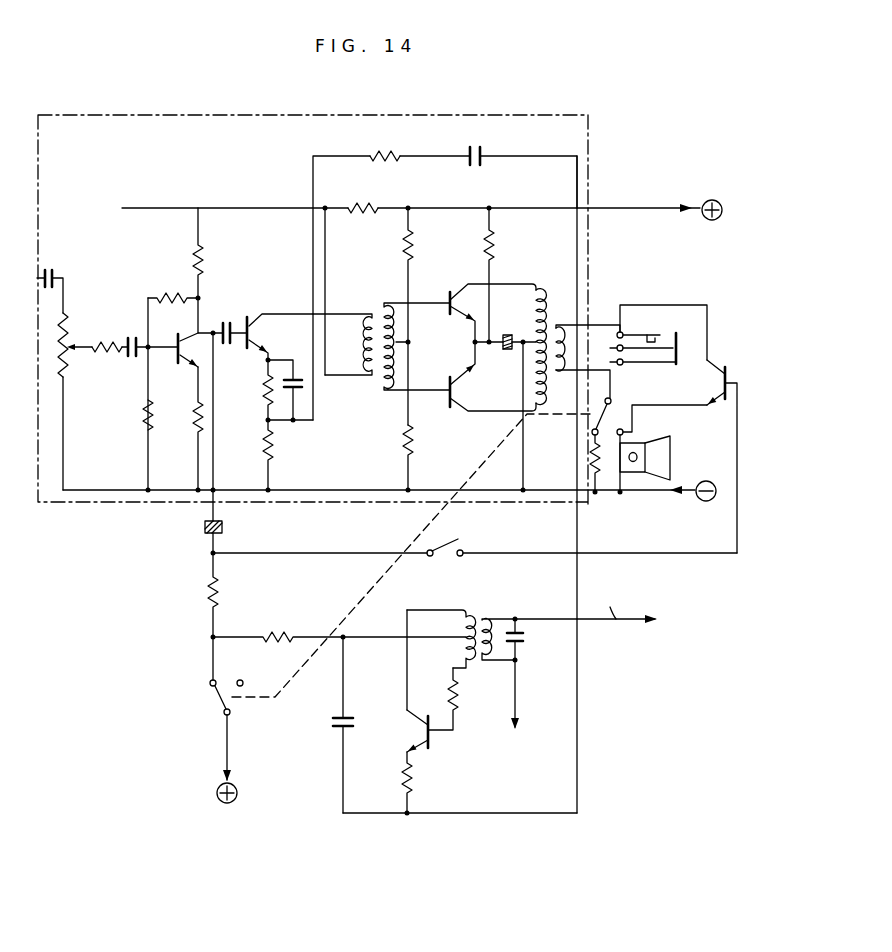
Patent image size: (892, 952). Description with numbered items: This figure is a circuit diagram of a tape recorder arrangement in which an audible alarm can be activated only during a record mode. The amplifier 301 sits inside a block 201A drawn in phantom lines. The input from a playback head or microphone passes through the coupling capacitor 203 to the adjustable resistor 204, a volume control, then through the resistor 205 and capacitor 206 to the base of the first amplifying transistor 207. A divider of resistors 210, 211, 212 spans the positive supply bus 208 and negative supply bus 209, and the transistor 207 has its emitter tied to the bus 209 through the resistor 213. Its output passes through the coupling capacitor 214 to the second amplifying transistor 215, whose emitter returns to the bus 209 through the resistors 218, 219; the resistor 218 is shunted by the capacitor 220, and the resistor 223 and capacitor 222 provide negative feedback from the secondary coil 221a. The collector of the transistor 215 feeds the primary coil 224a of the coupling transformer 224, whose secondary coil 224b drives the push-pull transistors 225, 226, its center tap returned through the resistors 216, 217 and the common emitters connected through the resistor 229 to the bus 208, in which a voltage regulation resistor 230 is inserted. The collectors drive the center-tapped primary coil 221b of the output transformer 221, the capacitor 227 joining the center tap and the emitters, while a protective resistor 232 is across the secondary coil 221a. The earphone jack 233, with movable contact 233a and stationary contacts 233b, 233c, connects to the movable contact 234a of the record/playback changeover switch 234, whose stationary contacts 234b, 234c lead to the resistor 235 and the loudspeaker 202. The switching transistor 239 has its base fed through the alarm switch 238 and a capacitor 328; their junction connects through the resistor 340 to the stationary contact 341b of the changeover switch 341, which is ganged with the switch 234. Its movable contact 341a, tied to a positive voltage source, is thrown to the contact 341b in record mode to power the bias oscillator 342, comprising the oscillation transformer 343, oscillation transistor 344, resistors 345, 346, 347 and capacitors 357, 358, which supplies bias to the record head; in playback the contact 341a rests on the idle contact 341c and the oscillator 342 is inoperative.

The amplifier 301 is at (264, 126).
The block 201A is at (592, 162).
The loudspeaker 202 is at (672, 458).
The coupling capacitor 203 is at (53, 272).
The adjustable resistor 204 is at (68, 322).
The resistor 205 is at (104, 352).
The capacitor 206 is at (130, 357).
The first amplifying transistor 207 is at (178, 363).
The positive supply bus 208 is at (660, 208).
The negative supply bus 209 is at (667, 492).
The resistor 210 is at (205, 250).
The resistor 211 is at (160, 296).
The resistor 212 is at (146, 414).
The resistor 213 is at (193, 420).
The coupling capacitor 214 is at (223, 322).
The second amplifying transistor 215 is at (250, 318).
The resistor 216 is at (412, 248).
The resistor 217 is at (411, 434).
The resistor 218 is at (263, 392).
The resistor 219 is at (263, 447).
The capacitor 220 is at (296, 377).
The output transformer 221 is at (564, 329).
The secondary coil 221a is at (566, 322).
The primary coil 221b is at (538, 302).
The capacitor 222 is at (475, 147).
The resistor 223 is at (386, 154).
The coupling transformer 224 is at (381, 347).
The primary coil 224a is at (362, 352).
The secondary coil 224b is at (387, 306).
The transistor 225 is at (446, 304).
The transistor 226 is at (448, 382).
The capacitor 227 is at (507, 352).
The resistor 229 is at (493, 248).
The voltage regulation resistor 230 is at (370, 206).
The protective resistor 232 is at (408, 555).
The earphone jack 233 is at (661, 320).
The movable contact 233a is at (617, 333).
The stationary contact 233b is at (624, 346).
The stationary contact 233c is at (624, 363).
The record/playback changeover switch 234 is at (625, 421).
The movable contact 234a is at (610, 401).
The stationary contact 234b is at (592, 434).
The stationary contact 234c is at (624, 432).
The resistor 235 is at (597, 474).
The alarm switch 238 is at (443, 547).
The switching transistor 239 is at (724, 368).
The capacitor 328 is at (204, 528).
The resistor 340 is at (208, 592).
The changeover switch 341 is at (215, 720).
The movable contact 341a is at (225, 715).
The stationary contact 341b is at (209, 683).
The stationary contact 341c is at (247, 675).
The bias oscillator 342 is at (389, 822).
The oscillation transformer 343 is at (478, 666).
The oscillation transistor 344 is at (432, 741).
The resistor 345 is at (450, 690).
The resistor 346 is at (413, 780).
The resistor 347 is at (272, 637).
The capacitor 357 is at (523, 637).
The capacitor 358 is at (333, 727).